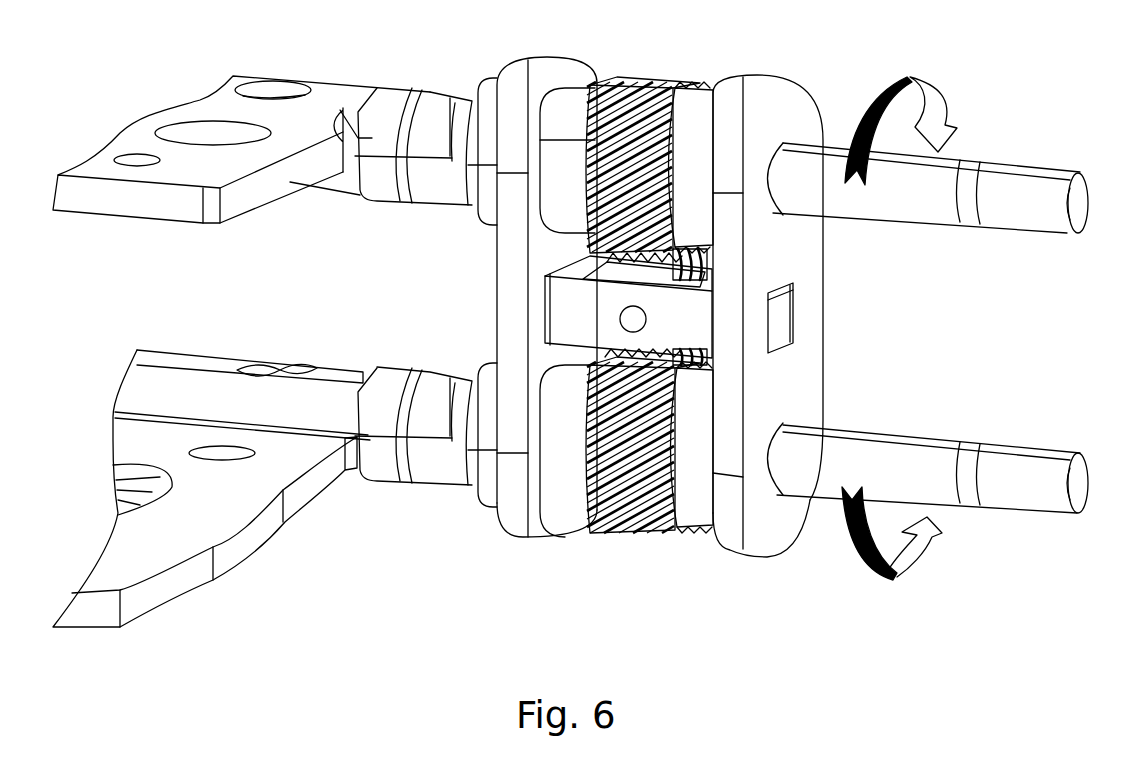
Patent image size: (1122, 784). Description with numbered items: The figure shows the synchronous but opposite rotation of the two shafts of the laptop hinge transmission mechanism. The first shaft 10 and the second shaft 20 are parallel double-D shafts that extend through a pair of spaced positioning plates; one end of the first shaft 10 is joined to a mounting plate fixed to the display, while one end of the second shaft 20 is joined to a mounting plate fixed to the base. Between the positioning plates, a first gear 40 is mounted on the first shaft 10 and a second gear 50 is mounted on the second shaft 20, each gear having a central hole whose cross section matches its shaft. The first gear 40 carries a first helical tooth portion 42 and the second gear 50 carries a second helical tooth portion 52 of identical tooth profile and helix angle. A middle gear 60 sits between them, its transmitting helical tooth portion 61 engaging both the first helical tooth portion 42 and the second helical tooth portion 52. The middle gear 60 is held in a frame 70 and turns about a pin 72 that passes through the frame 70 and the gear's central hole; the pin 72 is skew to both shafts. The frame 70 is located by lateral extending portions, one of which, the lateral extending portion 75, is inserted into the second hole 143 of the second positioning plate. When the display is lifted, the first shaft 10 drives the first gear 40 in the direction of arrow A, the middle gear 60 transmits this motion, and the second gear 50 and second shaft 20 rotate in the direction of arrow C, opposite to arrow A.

The first shaft 10 is at (1012, 187).
The second shaft 20 is at (1008, 472).
The first gear 40 is at (706, 117).
The first helical tooth portion 42 is at (657, 83).
The second gear 50 is at (695, 478).
The second helical tooth portion 52 is at (642, 498).
The middle gear 60 is at (708, 270).
The transmitting helical tooth portion 61 is at (703, 250).
The frame 70 is at (550, 434).
The pin 72 is at (631, 320).
The lateral extending portion 75 is at (780, 330).
The second hole 143 is at (797, 317).
The arrow A is at (930, 82).
The arrow C is at (910, 575).